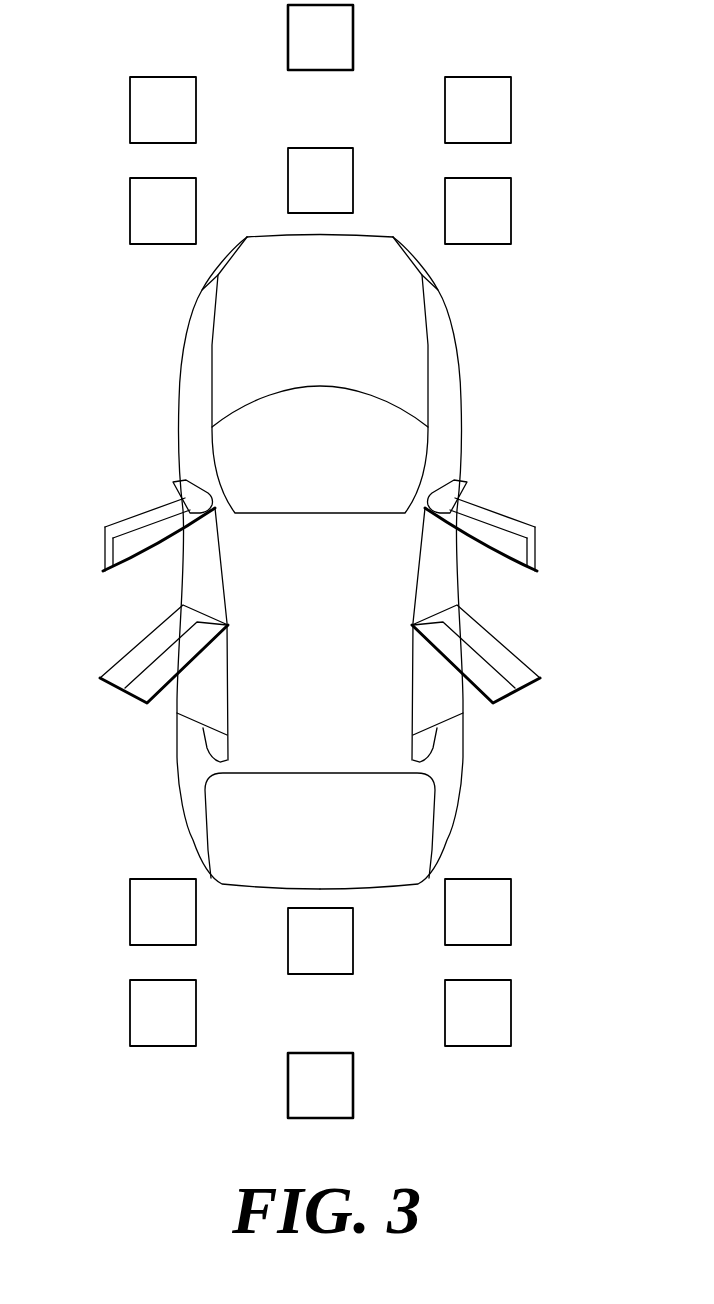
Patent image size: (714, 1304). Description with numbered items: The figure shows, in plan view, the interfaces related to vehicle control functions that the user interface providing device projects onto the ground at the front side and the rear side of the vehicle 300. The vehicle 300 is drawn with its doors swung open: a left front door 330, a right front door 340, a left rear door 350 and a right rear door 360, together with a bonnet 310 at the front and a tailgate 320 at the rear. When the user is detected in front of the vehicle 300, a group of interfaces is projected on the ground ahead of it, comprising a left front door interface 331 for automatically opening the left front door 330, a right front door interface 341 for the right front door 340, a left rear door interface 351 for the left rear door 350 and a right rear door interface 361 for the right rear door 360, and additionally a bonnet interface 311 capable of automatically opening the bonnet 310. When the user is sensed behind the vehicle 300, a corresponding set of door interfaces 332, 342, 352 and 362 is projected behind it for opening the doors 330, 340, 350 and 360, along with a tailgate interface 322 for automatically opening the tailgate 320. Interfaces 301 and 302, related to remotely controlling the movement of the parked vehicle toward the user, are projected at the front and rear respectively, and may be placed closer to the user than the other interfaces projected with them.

The vehicle 300 is at (455, 443).
The interface related to the function of remotely controlling the movement of the ve 301 is at (353, 43).
The interface related to the function of remotely controlling the movement of the ve 302 is at (353, 1087).
The bonnet 310 is at (422, 320).
The bonnet interface 311 is at (353, 185).
The tailgate 320 is at (429, 832).
The tailgate interface 322 is at (353, 945).
The left front door 330 is at (105, 552).
The left front door interface 331 is at (130, 113).
The door interface 332 is at (130, 907).
The right front door 340 is at (537, 550).
The right front door interface 341 is at (511, 113).
The door interface 342 is at (511, 907).
The left rear door 350 is at (120, 667).
The left rear door interface 351 is at (130, 214).
The door interface 352 is at (130, 1018).
The right rear door 360 is at (520, 663).
The right rear door interface 361 is at (511, 214).
The door interface 362 is at (511, 1018).